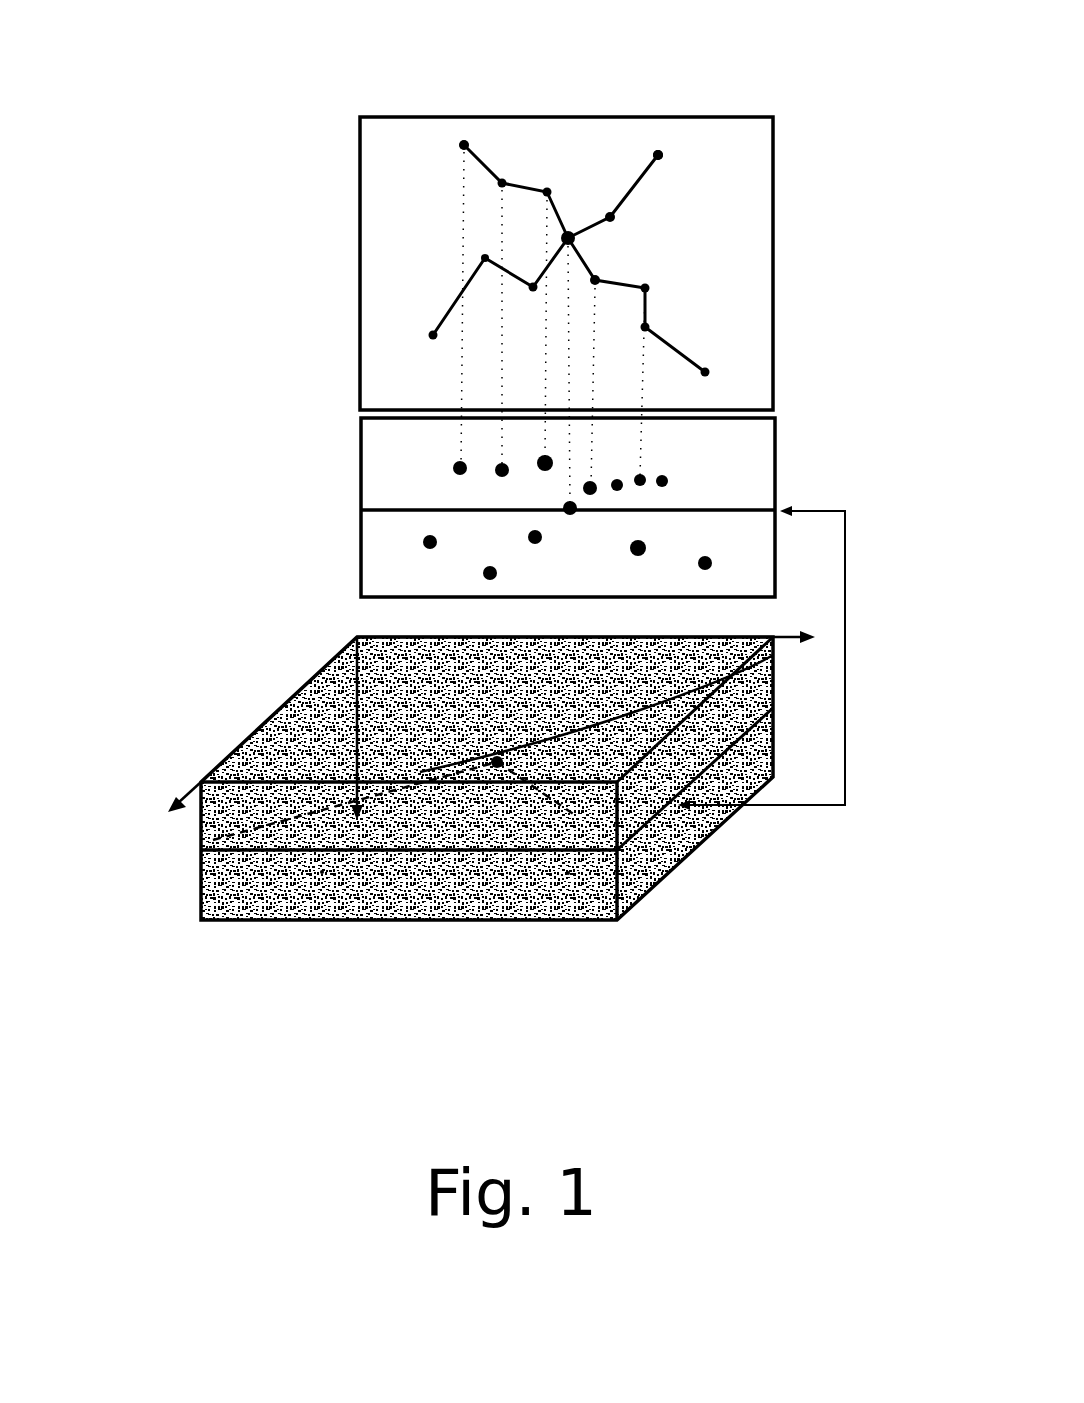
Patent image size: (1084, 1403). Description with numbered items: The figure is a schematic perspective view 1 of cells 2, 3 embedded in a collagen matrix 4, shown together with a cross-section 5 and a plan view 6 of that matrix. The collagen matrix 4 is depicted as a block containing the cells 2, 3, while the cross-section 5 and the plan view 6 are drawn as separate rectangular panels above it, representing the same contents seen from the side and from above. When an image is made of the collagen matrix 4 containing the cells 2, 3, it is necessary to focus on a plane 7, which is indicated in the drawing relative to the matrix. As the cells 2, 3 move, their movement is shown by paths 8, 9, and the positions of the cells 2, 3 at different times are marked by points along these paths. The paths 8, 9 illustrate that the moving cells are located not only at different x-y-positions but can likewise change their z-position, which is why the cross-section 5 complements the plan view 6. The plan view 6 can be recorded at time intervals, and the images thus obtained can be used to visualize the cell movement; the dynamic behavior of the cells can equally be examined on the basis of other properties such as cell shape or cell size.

The schematic perspective view 1 is at (461, 764).
The cell 2 is at (465, 142).
The cell 3 is at (658, 155).
The collagen matrix 4 is at (653, 855).
The cross-section 5 is at (778, 468).
The plan view 6 is at (786, 273).
The plane 7 is at (845, 655).
The path 8 is at (480, 167).
The path 9 is at (640, 182).